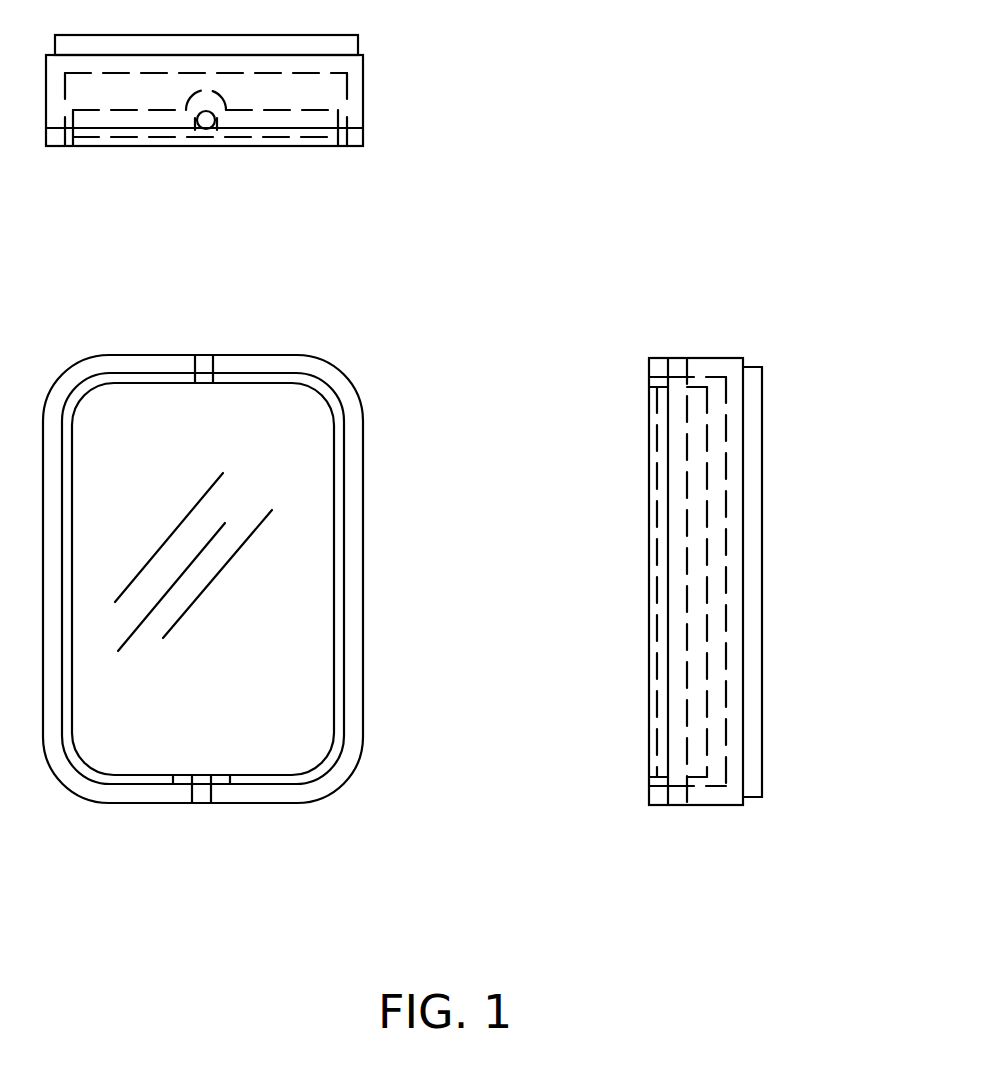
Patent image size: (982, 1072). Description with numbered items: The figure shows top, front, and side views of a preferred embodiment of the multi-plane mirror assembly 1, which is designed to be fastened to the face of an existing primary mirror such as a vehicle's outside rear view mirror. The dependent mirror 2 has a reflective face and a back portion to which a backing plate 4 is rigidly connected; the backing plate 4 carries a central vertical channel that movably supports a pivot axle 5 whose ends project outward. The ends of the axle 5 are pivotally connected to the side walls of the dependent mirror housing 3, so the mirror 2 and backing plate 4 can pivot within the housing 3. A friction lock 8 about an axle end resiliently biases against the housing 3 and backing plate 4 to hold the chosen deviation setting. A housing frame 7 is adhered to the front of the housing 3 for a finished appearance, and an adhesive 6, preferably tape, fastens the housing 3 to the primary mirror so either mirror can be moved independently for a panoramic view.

The multi-plane mirror assembly 1 is at (269, 540).
The dependent mirror 2 is at (310, 463).
The dependent mirror housing 3 is at (363, 595).
The backing plate 4 is at (270, 110).
The pivot axle 5 is at (675, 357).
The adhesive 6 is at (762, 480).
The housing frame 7 is at (355, 148).
The friction lock 8 is at (220, 773).